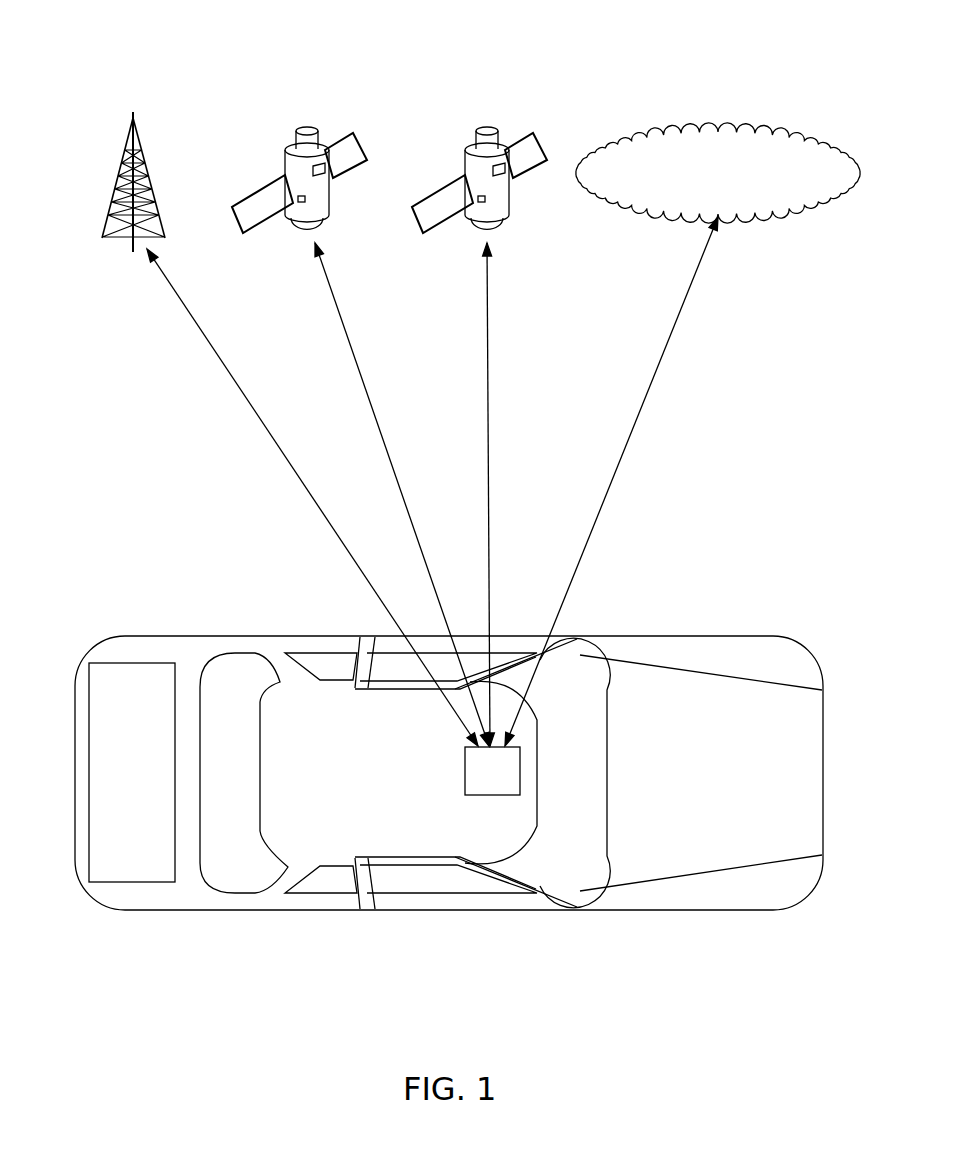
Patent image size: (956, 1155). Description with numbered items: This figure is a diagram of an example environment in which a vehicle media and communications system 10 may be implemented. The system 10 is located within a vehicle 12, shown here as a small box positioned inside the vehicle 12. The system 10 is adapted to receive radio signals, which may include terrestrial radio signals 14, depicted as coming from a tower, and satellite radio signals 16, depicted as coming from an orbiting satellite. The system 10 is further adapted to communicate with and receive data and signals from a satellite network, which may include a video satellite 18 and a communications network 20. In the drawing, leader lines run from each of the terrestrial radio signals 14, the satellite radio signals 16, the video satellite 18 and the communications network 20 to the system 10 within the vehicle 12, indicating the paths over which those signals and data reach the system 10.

The vehicle media and communications system 10 is at (507, 800).
The vehicle 12 is at (745, 900).
The terrestrial radio signals 14 is at (103, 146).
The satellite radio signals 16 is at (263, 146).
The video satellite 18 is at (443, 146).
The communications network 20 is at (595, 138).